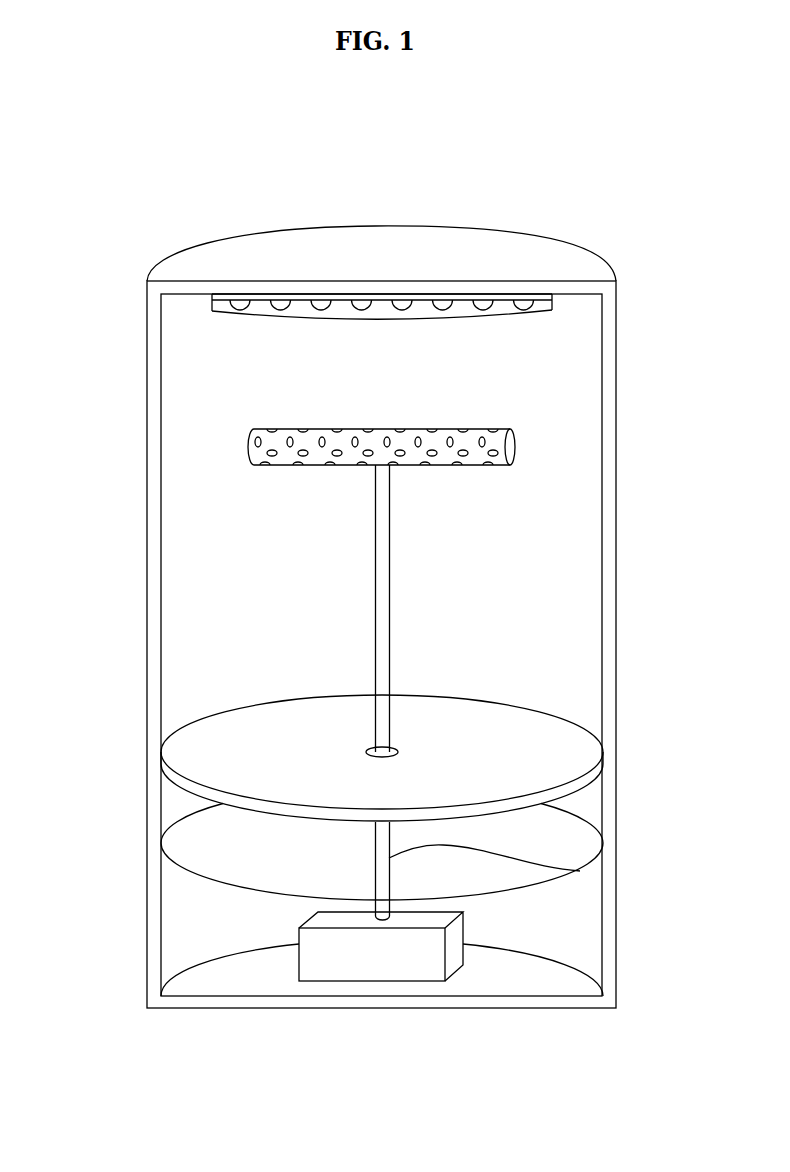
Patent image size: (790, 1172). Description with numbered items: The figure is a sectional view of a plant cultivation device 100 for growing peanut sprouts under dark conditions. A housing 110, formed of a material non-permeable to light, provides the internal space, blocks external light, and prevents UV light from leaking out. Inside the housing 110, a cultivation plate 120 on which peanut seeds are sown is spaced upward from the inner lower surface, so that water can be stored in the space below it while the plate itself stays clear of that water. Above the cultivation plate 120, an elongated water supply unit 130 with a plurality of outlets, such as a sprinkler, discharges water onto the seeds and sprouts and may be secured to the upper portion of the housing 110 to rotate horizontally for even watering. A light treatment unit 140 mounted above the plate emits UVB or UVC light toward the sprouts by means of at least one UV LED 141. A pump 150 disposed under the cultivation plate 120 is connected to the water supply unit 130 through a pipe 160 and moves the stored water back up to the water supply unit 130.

The plant cultivation device 100 is at (102, 156).
The housing 110 is at (611, 576).
The cultivation plate 120 is at (568, 734).
The water supply unit 130 is at (516, 446).
The light treatment unit 140 is at (552, 298).
The UV LED 141 is at (533, 309).
The pump 150 is at (458, 932).
The pipe 160 is at (580, 871).